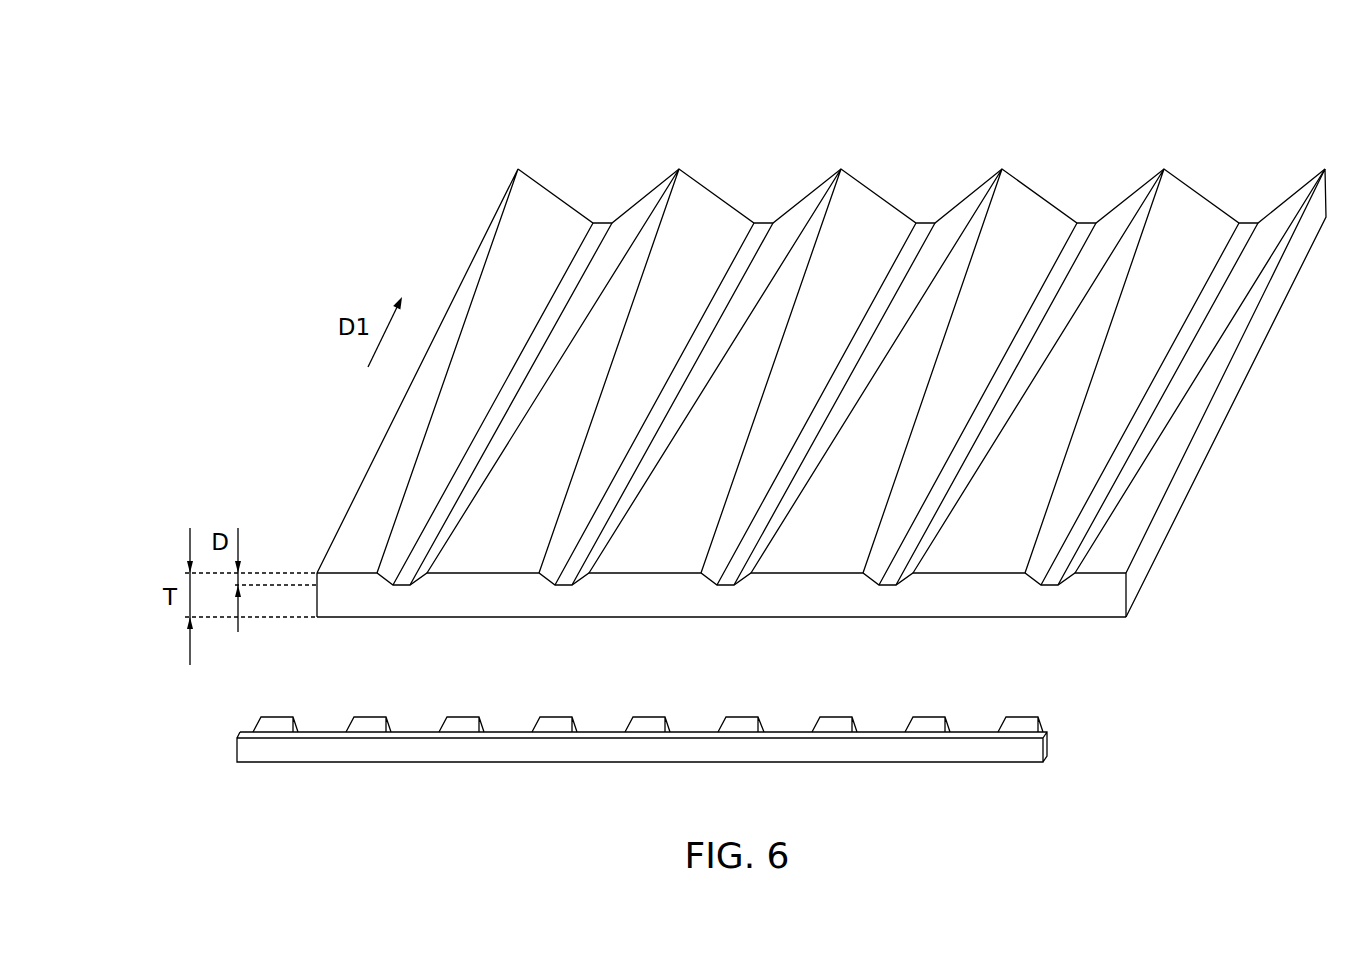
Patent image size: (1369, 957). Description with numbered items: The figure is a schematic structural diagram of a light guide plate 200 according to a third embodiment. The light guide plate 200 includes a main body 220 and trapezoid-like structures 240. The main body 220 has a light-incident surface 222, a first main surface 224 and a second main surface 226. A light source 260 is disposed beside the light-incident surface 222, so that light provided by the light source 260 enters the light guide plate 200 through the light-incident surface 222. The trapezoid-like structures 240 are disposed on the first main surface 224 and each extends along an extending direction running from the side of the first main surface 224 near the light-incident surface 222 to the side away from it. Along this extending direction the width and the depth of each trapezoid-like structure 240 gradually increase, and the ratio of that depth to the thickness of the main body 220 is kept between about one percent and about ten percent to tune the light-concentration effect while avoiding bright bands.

The light guide plate 200 is at (236, 162).
The main body 220 is at (1247, 357).
The light-incident surface 222 is at (489, 597).
The first main surface 224 is at (765, 326).
The second main surface 226 is at (1100, 620).
The trapezoid-like structures 240 is at (952, 225).
The light source 260 is at (245, 750).